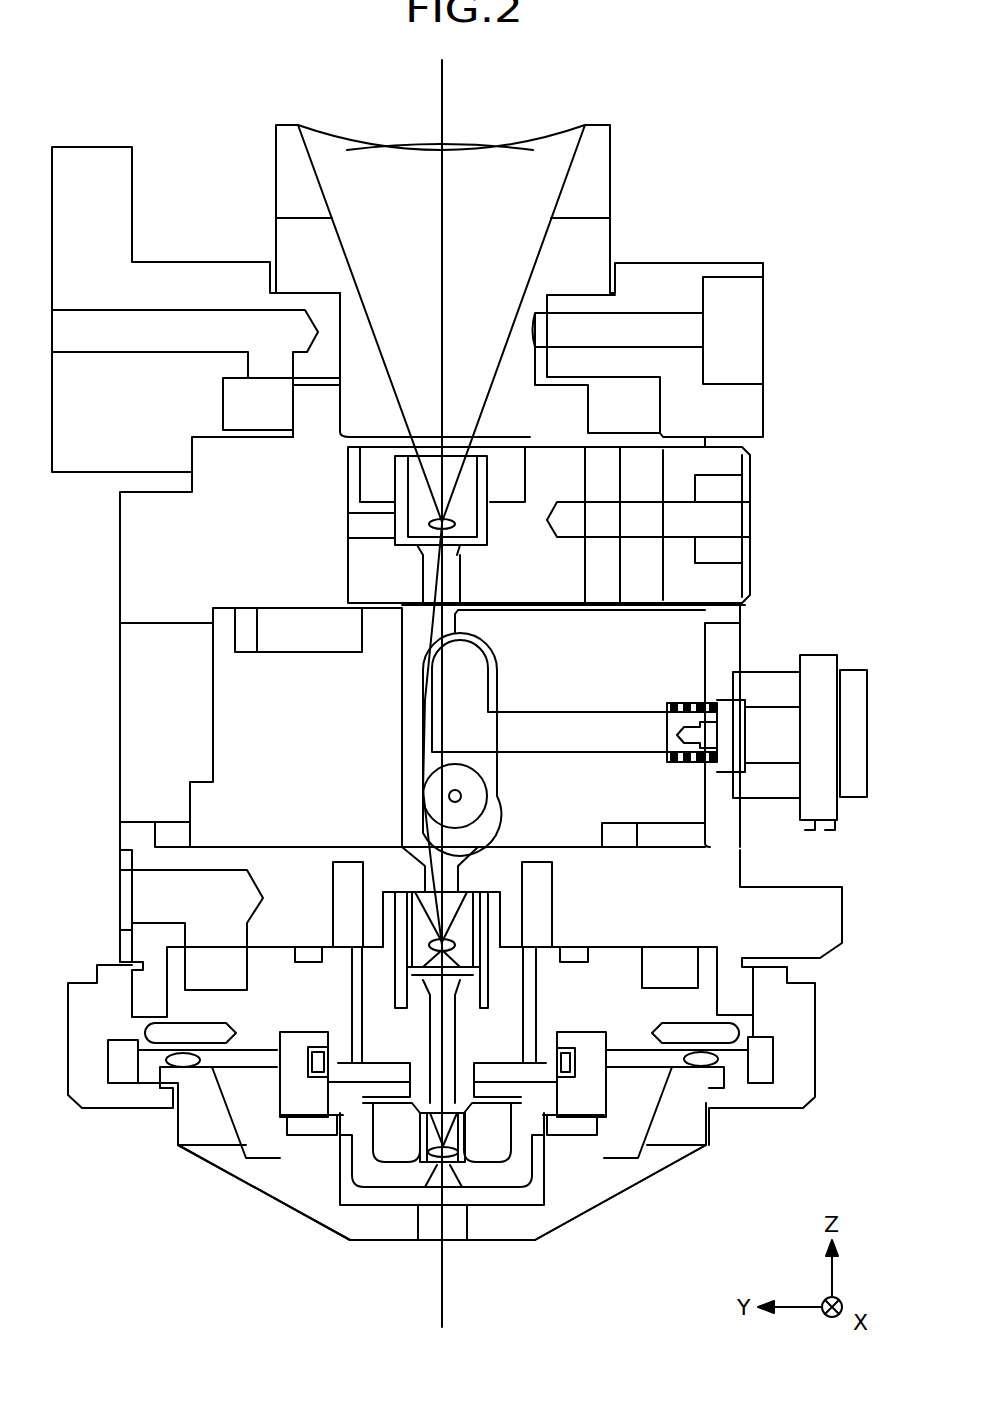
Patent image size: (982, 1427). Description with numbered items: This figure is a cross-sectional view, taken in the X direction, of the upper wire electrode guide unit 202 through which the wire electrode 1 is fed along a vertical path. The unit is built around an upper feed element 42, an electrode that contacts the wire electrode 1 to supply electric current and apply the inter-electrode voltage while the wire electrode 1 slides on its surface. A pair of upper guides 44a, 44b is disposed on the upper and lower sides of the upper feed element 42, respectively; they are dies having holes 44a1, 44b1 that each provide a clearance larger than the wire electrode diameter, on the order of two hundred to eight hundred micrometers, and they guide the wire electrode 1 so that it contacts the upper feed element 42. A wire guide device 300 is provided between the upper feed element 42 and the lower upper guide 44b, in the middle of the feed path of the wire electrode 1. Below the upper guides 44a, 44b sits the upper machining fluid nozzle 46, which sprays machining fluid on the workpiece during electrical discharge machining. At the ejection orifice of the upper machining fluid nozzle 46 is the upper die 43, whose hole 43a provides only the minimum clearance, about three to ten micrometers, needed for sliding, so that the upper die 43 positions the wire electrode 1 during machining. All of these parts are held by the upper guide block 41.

The wire electrode 1 is at (442, 87).
The upper guide block 41 is at (133, 543).
The upper feed element 42 is at (470, 670).
The wire guide device 300 is at (472, 795).
The upper guide 44a is at (463, 510).
The hole 44a1 is at (457, 523).
The upper guide 44b is at (458, 921).
The hole 44b1 is at (458, 946).
The upper die 43 is at (455, 1143).
The hole 43a is at (463, 1155).
The upper machining fluid nozzle 46 is at (372, 1222).
The upper wire electrode guide unit 202 is at (193, 1297).